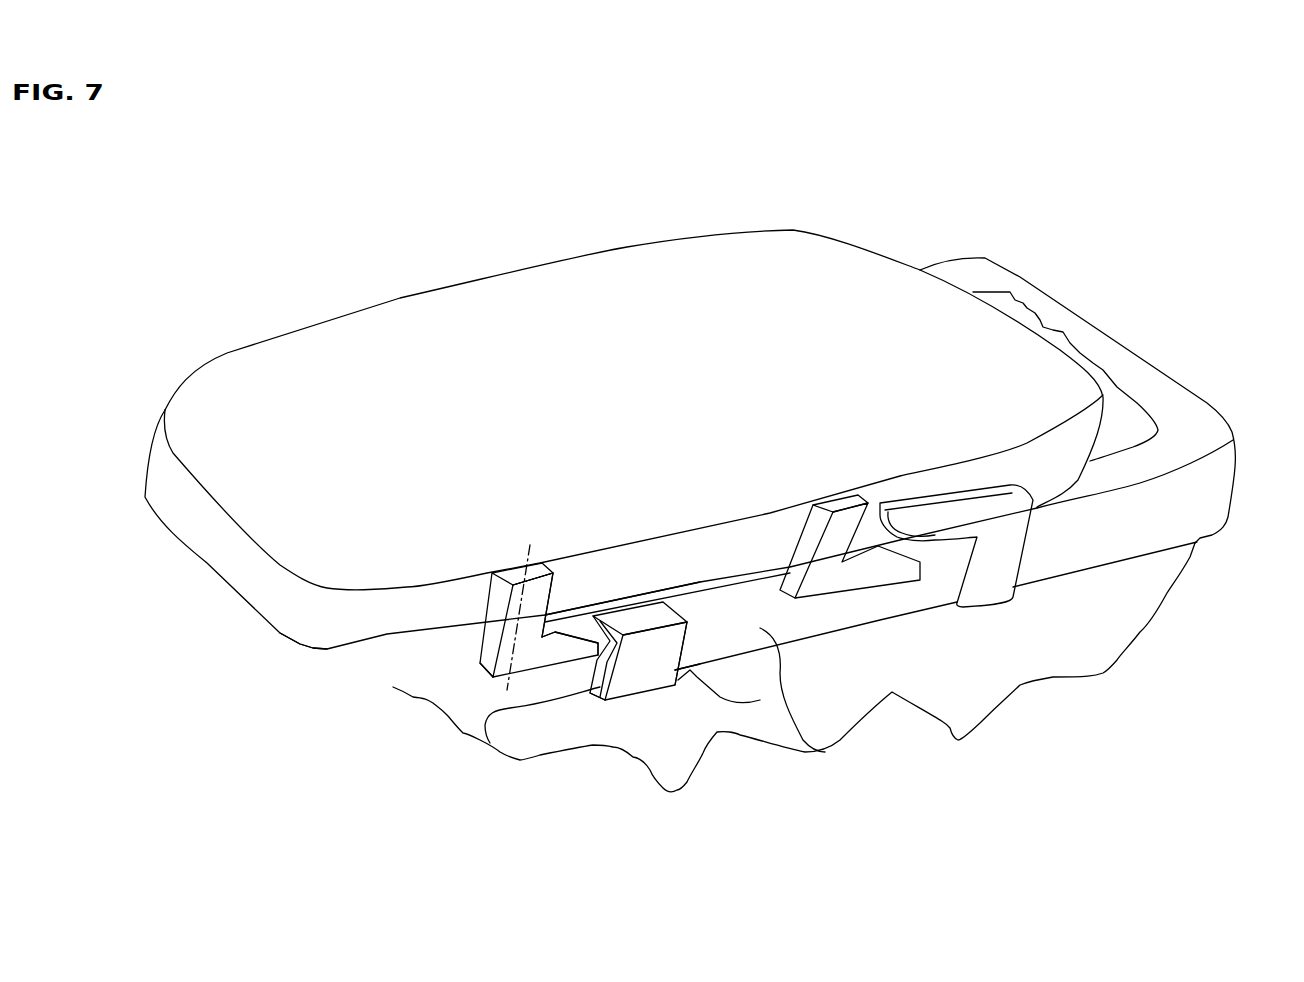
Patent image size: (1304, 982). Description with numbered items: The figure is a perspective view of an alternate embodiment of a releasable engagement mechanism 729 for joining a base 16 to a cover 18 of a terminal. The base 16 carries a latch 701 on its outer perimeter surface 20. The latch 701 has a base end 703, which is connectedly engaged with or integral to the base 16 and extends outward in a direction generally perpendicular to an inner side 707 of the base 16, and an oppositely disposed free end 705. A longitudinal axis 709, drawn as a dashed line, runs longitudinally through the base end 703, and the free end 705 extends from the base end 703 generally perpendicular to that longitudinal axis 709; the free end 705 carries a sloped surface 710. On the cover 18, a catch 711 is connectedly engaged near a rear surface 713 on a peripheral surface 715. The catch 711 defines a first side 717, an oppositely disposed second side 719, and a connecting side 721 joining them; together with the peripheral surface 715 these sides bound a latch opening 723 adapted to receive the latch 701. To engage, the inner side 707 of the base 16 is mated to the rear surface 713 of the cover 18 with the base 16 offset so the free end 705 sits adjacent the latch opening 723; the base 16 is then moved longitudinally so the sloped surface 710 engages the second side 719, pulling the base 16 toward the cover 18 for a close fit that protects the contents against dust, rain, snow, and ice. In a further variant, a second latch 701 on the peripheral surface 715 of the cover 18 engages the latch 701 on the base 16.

The base 16 is at (770, 268).
The cover 18 is at (1168, 602).
The outer perimeter surface 20 is at (1035, 457).
The latch 701 is at (487, 637).
The base end 703 is at (537, 598).
The free end 705 is at (552, 660).
The inner side 707 is at (330, 650).
The longitudinal axis 709 is at (527, 565).
The sloped surface 710 is at (876, 500).
The catch 711 is at (687, 672).
The rear surface 713 is at (1198, 425).
The peripheral surface 715 is at (815, 753).
The first side 717 is at (615, 693).
The second side 719 is at (690, 593).
The connecting side 721 is at (682, 632).
The latch opening 723 is at (668, 690).
The releasable engagement mechanism 729 is at (477, 675).